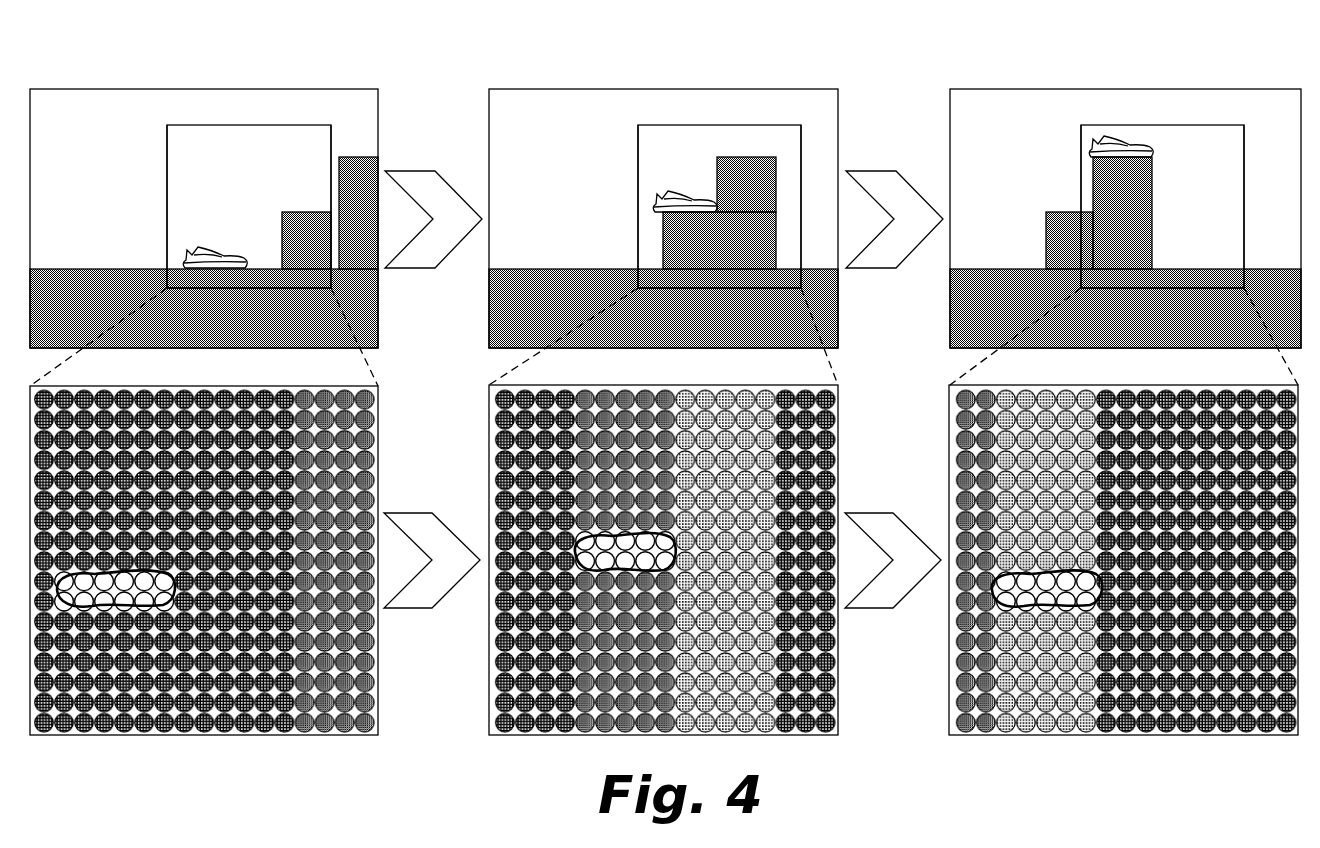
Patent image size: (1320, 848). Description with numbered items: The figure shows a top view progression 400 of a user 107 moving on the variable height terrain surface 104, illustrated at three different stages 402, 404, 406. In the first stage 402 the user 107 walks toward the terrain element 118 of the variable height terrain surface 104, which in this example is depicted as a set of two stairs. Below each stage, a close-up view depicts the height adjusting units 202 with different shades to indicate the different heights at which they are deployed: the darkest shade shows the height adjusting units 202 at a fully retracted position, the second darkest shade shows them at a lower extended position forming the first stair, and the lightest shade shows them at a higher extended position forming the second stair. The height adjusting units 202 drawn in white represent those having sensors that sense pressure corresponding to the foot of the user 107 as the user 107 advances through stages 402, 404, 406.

The top view progression 400 is at (130, 52).
The stage 402 is at (204, 218).
The stage 404 is at (663, 218).
The stage 406 is at (1125, 218).
The variable height terrain surface 104 is at (138, 269).
The user 107 is at (201, 255).
The terrain element 118 is at (717, 213).
The height adjusting units 202 is at (165, 733).